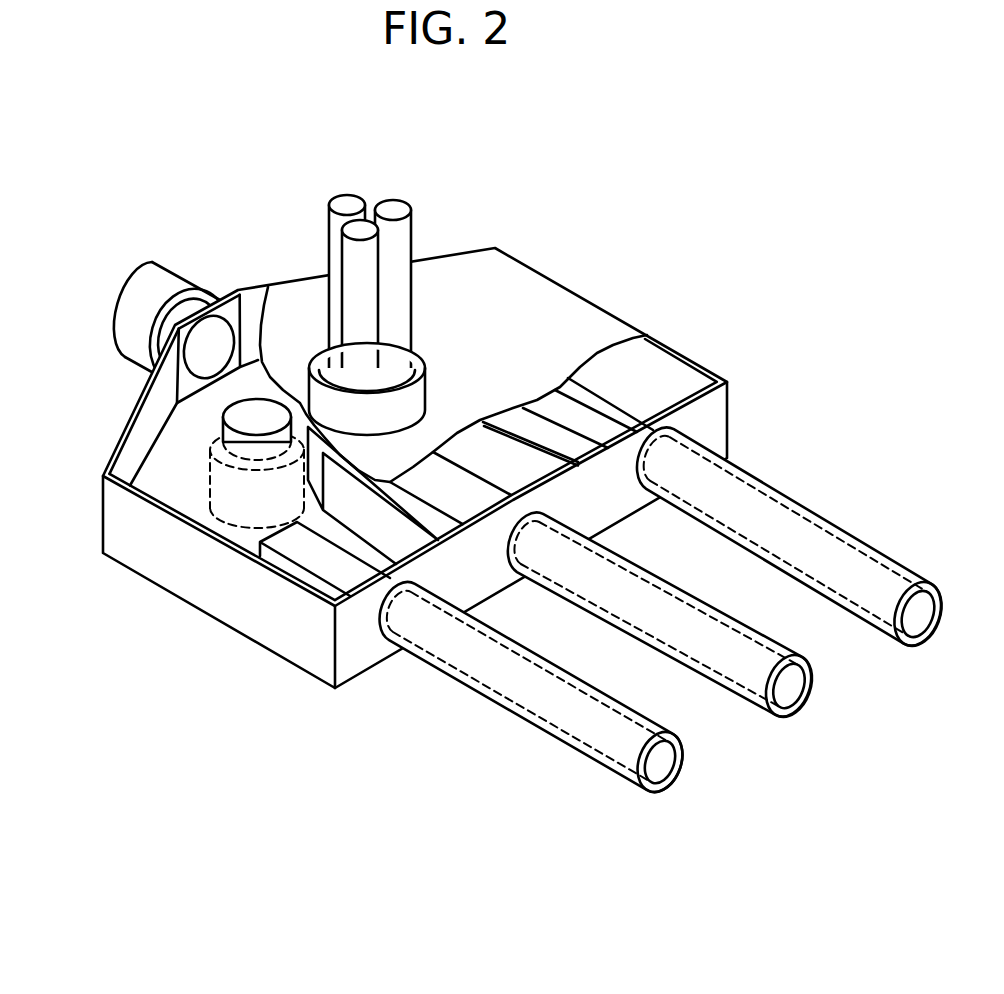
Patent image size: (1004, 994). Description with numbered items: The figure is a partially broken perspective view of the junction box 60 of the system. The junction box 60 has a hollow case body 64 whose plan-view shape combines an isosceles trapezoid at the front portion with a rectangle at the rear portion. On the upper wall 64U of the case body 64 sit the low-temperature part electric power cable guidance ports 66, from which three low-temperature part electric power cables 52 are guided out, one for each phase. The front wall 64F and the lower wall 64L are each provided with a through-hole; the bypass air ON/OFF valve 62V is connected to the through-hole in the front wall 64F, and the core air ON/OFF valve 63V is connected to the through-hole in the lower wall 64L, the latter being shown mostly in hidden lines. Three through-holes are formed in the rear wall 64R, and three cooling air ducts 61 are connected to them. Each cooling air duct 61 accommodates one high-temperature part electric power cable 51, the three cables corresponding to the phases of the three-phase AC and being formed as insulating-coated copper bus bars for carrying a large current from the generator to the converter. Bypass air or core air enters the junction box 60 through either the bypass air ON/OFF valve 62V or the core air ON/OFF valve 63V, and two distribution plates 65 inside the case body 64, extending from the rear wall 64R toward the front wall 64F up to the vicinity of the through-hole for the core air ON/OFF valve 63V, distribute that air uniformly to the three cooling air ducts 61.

The junction box 60 is at (677, 297).
The case body 64 is at (683, 353).
The upper wall 64U is at (530, 313).
The front wall 64F is at (230, 310).
The lower wall 64L is at (170, 470).
The rear wall 64R is at (348, 652).
The bypass air ON/OFF valve 62V is at (140, 283).
The core air ON/OFF valve 63V is at (230, 507).
The low-temperature part electric power cable 52 is at (388, 207).
The low-temperature part electric power cable guidance port 66 is at (430, 380).
The distribution plate 65 is at (403, 537).
The cooling air duct 61 is at (590, 762).
The high-temperature part electric power cable 51 is at (660, 760).